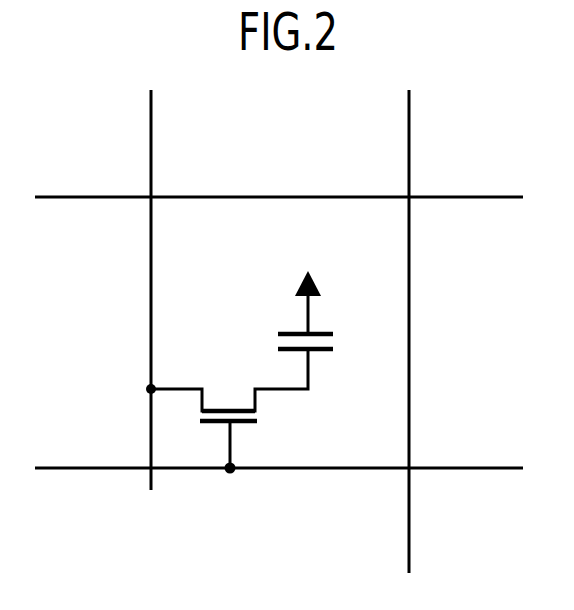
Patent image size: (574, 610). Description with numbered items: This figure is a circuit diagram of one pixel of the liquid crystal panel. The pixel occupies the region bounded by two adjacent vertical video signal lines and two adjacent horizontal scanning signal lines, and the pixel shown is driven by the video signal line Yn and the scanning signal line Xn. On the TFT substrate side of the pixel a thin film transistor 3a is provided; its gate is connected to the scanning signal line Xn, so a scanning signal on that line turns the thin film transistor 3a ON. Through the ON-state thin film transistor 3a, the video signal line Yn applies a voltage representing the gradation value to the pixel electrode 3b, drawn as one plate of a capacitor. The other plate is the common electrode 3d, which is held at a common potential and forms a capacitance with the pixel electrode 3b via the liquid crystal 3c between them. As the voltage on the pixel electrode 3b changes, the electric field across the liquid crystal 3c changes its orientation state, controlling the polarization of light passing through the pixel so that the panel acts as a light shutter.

The thin film transistor 3a is at (256, 424).
The pixel electrode 3b is at (330, 352).
The liquid crystal 3c is at (373, 337).
The common electrode 3d is at (331, 334).
The scanning signal line Xn is at (495, 469).
The video signal line Yn is at (151, 131).